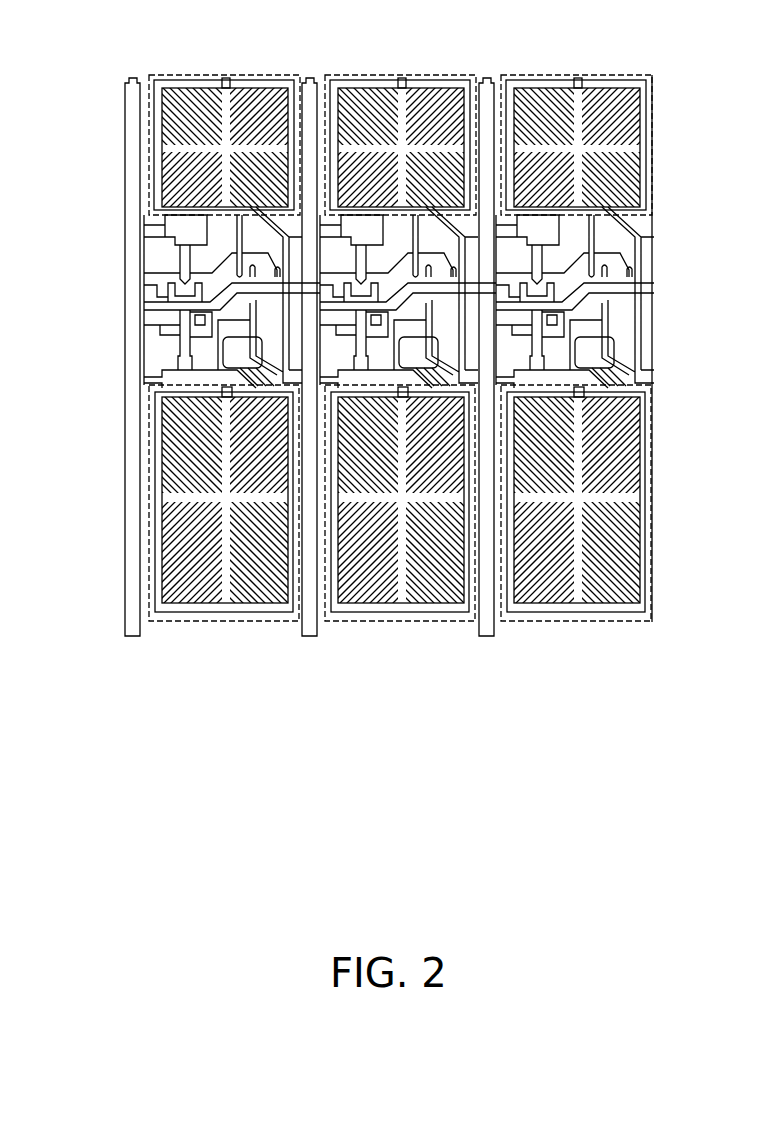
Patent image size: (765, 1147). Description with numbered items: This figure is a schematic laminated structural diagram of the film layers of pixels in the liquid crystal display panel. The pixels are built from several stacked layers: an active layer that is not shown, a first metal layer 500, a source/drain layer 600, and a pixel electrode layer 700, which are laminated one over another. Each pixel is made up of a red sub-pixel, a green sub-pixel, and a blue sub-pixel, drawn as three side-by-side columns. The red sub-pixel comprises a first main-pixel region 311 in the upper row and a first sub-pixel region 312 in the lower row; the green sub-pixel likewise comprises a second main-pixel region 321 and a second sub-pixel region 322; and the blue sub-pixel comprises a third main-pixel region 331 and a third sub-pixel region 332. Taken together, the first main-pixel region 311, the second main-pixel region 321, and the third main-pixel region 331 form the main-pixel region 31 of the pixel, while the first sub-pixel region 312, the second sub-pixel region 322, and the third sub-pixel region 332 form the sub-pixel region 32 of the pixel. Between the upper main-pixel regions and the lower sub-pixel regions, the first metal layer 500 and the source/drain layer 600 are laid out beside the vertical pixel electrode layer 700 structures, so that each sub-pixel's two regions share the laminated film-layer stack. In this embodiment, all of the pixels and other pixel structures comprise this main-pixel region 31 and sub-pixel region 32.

The main-pixel region 31 is at (399, 426).
The sub-pixel region 32 is at (400, 465).
The first main-pixel region 311 is at (181, 73).
The second main-pixel region 321 is at (377, 73).
The third main-pixel region 331 is at (553, 73).
The first sub-pixel region 312 is at (244, 627).
The second sub-pixel region 322 is at (418, 627).
The third sub-pixel region 332 is at (617, 627).
The first metal layer 500 is at (153, 233).
The source/drain layer 600 is at (147, 377).
The pixel electrode layer 700 is at (137, 217).